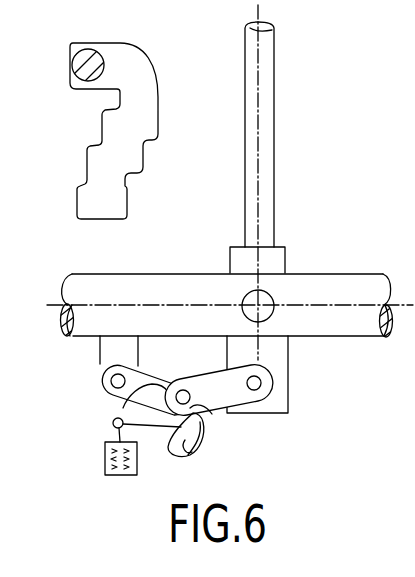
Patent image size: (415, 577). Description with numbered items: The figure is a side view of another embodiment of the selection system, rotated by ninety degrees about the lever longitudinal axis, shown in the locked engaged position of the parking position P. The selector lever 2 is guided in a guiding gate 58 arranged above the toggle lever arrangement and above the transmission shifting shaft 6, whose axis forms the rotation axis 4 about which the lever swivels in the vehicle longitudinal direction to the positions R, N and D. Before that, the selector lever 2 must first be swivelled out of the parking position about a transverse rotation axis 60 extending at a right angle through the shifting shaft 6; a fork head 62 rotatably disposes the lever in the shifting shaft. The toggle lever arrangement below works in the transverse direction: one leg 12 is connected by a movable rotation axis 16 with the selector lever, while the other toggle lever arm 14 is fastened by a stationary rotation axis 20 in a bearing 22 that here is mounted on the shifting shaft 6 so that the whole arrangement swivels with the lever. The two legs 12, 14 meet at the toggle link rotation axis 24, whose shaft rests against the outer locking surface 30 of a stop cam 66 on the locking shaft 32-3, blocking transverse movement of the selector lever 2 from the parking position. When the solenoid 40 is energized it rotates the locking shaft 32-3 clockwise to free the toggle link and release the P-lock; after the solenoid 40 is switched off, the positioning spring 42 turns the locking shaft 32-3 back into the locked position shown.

The selector lever 2 is at (92, 45).
The guiding gate 58 is at (160, 100).
The fork head 62 is at (275, 258).
The rotation axis 4 is at (343, 308).
The transmission shifting shaft 6 is at (318, 288).
The transverse rotation axis 60 is at (247, 295).
The bearing 22 is at (100, 358).
The toggle lever arm 14 is at (167, 364).
The leg 12 is at (205, 372).
The stationary rotation axis 20 is at (110, 380).
The movable rotation axis 16 is at (272, 378).
The toggle link rotation axis 24 is at (124, 405).
The locking surface 30 is at (205, 407).
The stop cam 66 is at (204, 420).
The locking shaft 32-3 is at (193, 447).
The solenoid 40 is at (98, 449).
The positioning spring 42 is at (104, 460).